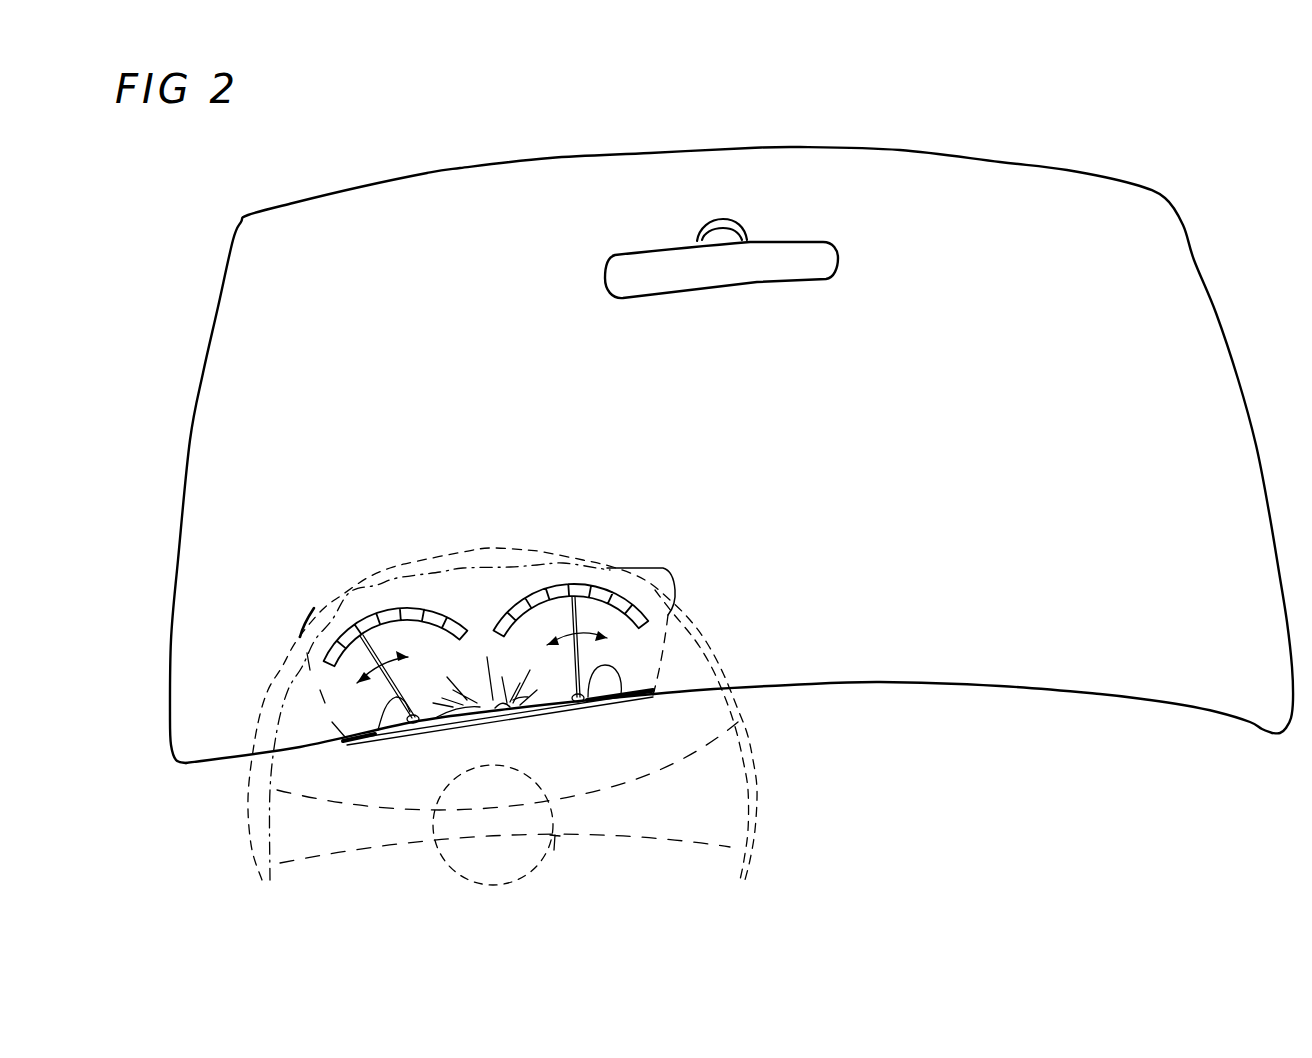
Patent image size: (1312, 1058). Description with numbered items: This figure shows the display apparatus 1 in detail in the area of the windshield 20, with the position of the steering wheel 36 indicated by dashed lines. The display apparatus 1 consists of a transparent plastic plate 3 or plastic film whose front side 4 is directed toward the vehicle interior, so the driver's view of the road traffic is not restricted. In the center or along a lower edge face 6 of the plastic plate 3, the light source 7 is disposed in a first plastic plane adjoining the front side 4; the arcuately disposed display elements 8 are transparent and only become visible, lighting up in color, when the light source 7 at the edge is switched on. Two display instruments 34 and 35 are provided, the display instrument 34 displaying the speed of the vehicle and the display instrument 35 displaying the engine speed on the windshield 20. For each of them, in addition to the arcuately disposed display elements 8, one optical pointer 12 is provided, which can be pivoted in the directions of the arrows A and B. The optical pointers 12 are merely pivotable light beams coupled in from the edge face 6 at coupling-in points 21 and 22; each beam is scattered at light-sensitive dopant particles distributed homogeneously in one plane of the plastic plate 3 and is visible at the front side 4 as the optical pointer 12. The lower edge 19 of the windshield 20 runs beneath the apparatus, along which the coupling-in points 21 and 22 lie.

The display apparatus 1 is at (610, 507).
The transparent plastic plate 3 is at (332, 608).
The front side 4 is at (520, 583).
The lower edge face 6 is at (460, 723).
The light source 7 is at (503, 708).
The arcuately disposed display elements 8 is at (495, 586).
The optical pointer 12 is at (371, 735).
The lower edge of windshield 19 is at (895, 675).
The windshield 20 is at (1083, 168).
The coupling-in point 21 is at (420, 724).
The coupling-in point 22 is at (578, 707).
The display instrument 34 is at (450, 610).
The display instrument 35 is at (636, 584).
The steering wheel 36 is at (757, 775).